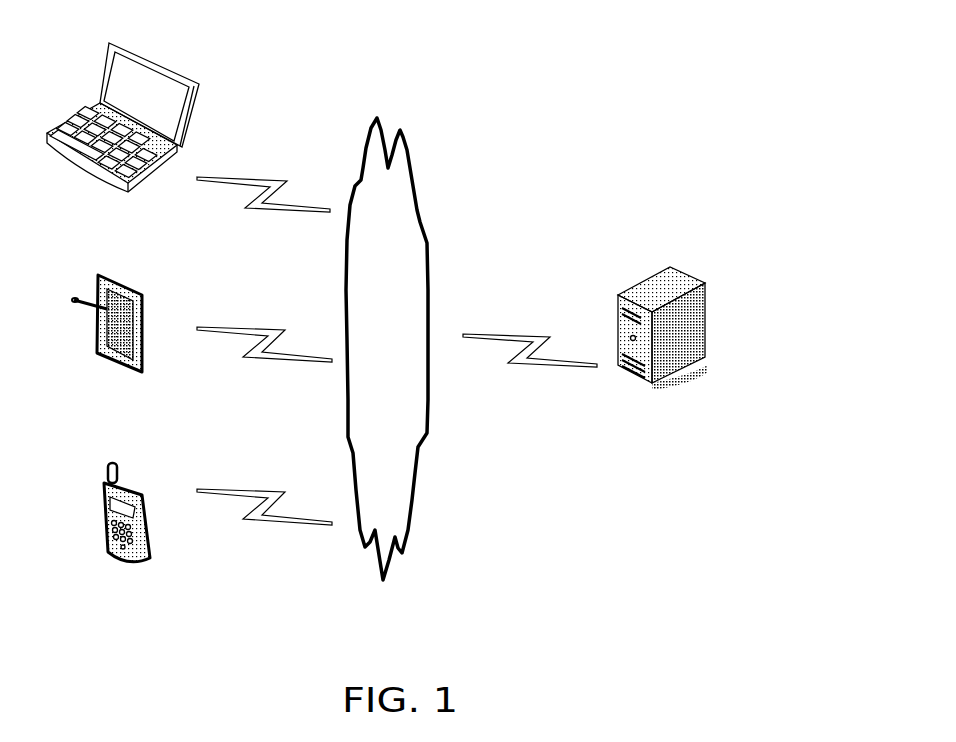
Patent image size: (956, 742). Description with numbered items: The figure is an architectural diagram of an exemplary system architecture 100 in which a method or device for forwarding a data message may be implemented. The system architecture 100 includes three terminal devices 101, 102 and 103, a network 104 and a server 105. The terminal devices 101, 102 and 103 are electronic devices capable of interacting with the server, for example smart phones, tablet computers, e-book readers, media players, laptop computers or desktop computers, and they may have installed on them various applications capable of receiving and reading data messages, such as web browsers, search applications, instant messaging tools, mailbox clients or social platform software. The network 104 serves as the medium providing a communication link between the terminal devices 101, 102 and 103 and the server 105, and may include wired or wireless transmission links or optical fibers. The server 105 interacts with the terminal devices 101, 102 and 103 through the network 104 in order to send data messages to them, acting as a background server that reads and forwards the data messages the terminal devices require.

The system architecture 100 is at (583, 33).
The terminal device 101 is at (127, 530).
The terminal device 102 is at (107, 341).
The terminal device 103 is at (123, 134).
The network 104 is at (387, 349).
The server 105 is at (663, 346).